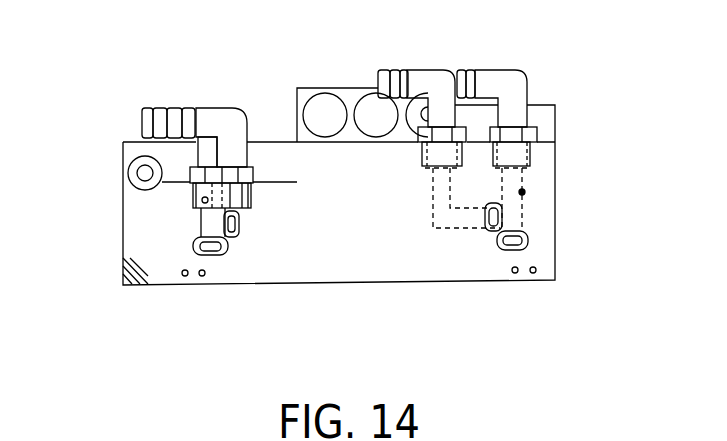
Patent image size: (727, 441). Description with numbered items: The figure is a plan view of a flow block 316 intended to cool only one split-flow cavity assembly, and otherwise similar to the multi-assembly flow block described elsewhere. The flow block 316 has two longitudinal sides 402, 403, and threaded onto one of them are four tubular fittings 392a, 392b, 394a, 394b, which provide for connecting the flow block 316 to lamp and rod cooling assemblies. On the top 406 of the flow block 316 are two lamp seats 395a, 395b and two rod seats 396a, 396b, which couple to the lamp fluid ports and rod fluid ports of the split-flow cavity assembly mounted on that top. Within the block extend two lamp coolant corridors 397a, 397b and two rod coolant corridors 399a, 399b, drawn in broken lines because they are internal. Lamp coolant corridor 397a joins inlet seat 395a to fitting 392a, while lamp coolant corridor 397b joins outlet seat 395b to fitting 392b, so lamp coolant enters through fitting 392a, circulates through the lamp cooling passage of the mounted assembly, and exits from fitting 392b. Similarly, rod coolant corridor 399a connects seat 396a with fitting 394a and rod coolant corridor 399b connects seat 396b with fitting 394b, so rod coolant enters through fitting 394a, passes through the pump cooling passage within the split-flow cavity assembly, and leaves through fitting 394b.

The flow block 316 is at (167, 268).
The tubular fitting 392a is at (212, 148).
The tubular fitting 392b is at (510, 83).
The tubular fitting 394a is at (233, 116).
The tubular fitting 394b is at (415, 80).
The lamp seat 395a is at (218, 255).
The lamp seat 395b is at (528, 243).
The rod seat 396a is at (238, 220).
The rod seat 396b is at (490, 218).
The lamp coolant corridor 397a is at (202, 218).
The lamp coolant corridor 397b is at (523, 180).
The rod coolant corridor 399a is at (243, 220).
The rod coolant corridor 399b is at (433, 190).
The longitudinal side 402 is at (320, 106).
The longitudinal side 403 is at (315, 284).
The top 406 is at (378, 250).